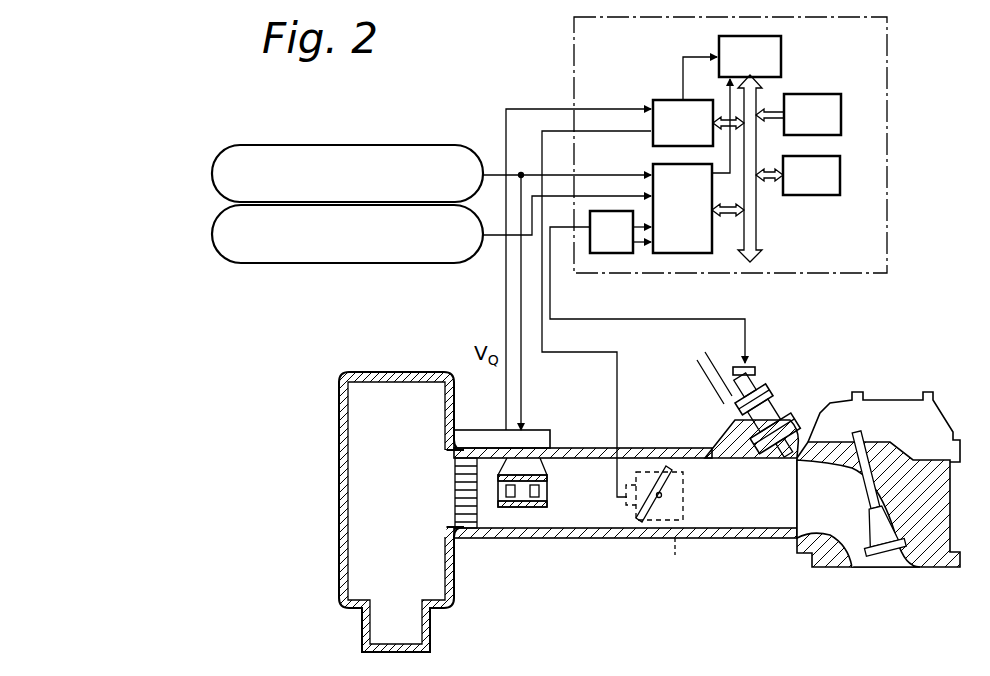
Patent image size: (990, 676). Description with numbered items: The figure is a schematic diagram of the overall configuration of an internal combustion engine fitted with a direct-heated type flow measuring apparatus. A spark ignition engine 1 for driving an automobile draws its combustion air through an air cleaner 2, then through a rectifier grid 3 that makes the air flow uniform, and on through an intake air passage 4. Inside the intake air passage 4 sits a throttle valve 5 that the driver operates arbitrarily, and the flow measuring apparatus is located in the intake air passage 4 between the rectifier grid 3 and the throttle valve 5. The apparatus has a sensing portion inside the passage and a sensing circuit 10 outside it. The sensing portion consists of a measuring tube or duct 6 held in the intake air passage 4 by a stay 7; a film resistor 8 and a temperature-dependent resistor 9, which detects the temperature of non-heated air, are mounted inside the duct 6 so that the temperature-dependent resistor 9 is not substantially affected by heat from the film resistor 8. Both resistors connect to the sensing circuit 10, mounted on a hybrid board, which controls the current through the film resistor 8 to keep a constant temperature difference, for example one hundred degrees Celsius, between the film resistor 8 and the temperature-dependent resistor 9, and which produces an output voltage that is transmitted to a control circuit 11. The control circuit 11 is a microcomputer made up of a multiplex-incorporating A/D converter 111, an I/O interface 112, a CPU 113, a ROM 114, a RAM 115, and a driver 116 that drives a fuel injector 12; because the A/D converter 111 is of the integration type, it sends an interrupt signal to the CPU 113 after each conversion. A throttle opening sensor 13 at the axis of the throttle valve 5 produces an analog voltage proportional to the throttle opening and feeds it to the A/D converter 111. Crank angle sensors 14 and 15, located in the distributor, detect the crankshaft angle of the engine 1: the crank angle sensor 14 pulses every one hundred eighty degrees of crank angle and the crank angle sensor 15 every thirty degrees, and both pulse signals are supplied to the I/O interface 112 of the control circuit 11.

The spark ignition engine 1 is at (936, 560).
The air cleaner 2 is at (418, 392).
The rectifier grid 3 is at (468, 522).
The intake air passage 4 is at (612, 526).
The throttle valve 5 is at (674, 478).
The measuring tube (duct) 6 is at (525, 506).
The stay 7 is at (540, 472).
The film resistor 8 is at (540, 490).
The temperature-dependent resistor 9 is at (504, 490).
The sensing circuit 10 is at (550, 438).
The control circuit 11 is at (888, 27).
The fuel injector 12 is at (762, 386).
The throttle opening sensor 13 is at (676, 562).
The crank angle sensor 14 is at (222, 153).
The crank angle sensor 15 is at (218, 230).
The analog/digital (A/D) converter 111 is at (662, 100).
The input/output (I/O) interface 112 is at (712, 238).
The central processing unit (CPU) 113 is at (782, 57).
The read-only memory (ROM) 114 is at (841, 113).
The random-access memory (RAM) 115 is at (840, 175).
The driver 116 is at (612, 254).